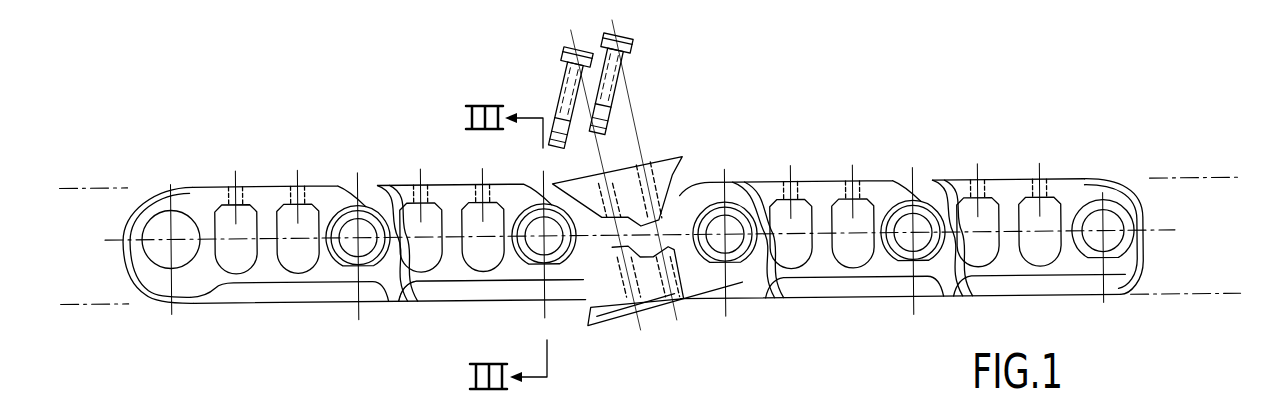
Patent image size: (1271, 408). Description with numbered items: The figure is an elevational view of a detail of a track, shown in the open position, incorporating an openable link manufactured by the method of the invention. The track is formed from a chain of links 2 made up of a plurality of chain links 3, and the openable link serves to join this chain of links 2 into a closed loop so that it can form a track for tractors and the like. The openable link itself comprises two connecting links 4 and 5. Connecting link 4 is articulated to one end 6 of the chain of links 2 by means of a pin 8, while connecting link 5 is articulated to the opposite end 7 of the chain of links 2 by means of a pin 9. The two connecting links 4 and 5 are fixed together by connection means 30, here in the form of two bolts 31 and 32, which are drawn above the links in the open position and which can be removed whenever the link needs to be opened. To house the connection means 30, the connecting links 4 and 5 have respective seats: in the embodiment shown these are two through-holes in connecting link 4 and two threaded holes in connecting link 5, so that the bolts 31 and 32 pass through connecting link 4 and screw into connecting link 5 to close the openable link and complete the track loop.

The chain of links 2 is at (175, 150).
The chain links 3 is at (268, 291).
The connecting link 4 is at (676, 172).
The connecting link 5 is at (686, 284).
The end of the chain of links 6 is at (540, 294).
The end of the chain of links 7 is at (799, 284).
The pin 8 is at (553, 250).
The pin 9 is at (721, 246).
The connection means 30 is at (620, 175).
The bolt 31 is at (580, 86).
The bolt 32 is at (638, 80).